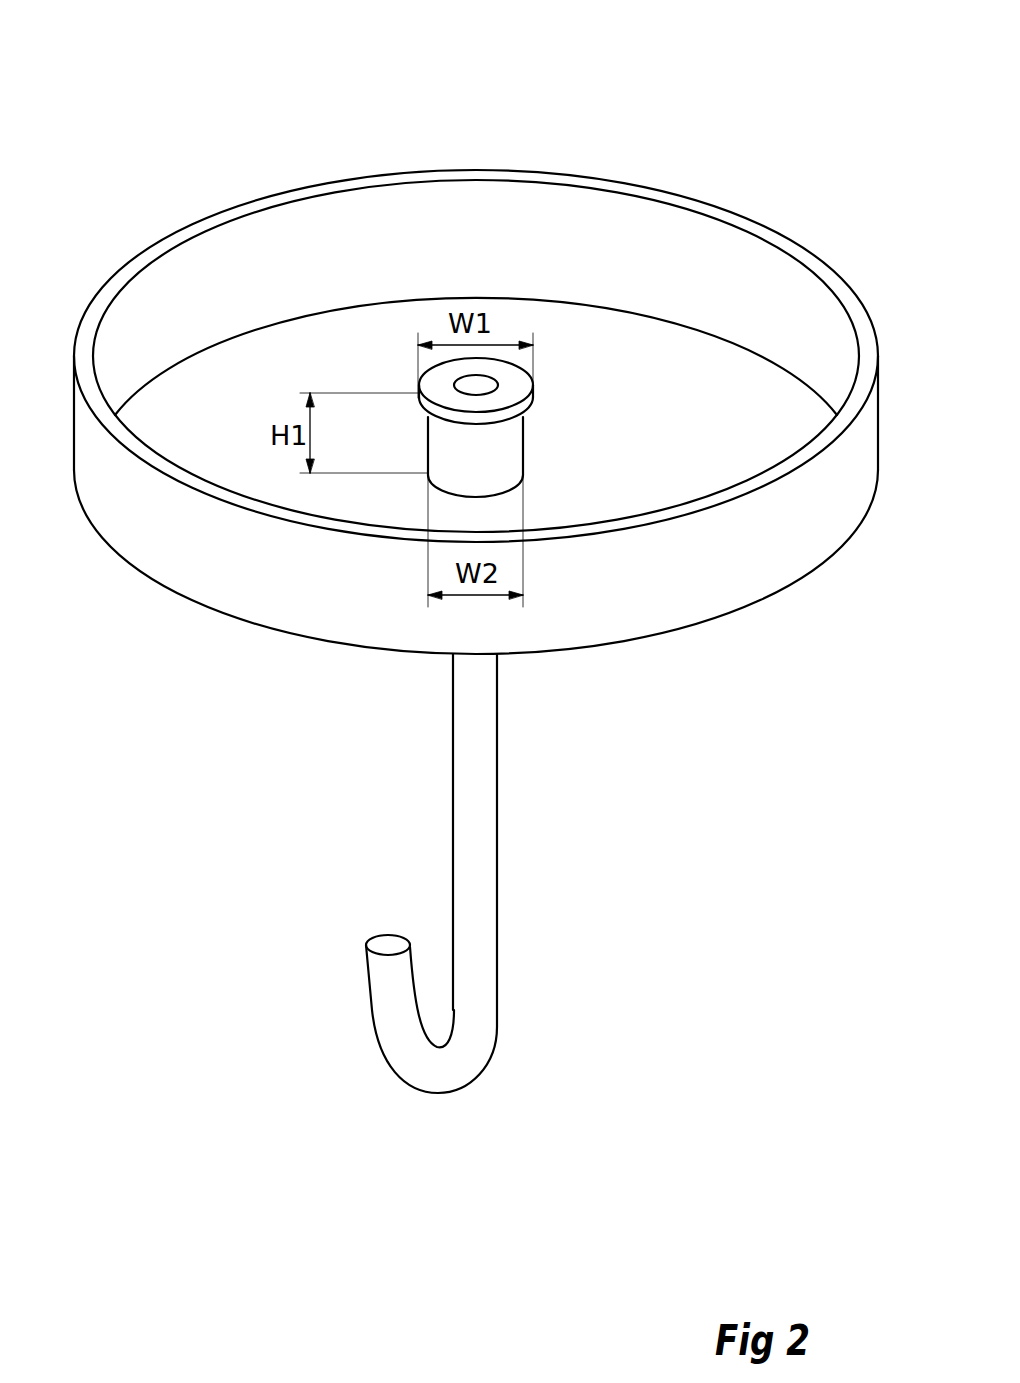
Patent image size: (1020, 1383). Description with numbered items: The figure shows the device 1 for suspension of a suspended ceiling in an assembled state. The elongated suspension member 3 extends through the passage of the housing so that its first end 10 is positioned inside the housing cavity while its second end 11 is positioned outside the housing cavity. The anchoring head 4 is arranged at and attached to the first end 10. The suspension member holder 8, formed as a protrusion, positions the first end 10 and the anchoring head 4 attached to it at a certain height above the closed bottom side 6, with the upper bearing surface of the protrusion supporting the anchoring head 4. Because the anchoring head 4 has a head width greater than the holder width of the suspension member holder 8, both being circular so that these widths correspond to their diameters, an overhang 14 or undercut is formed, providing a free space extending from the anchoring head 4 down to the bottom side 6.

The device 1 is at (670, 128).
The elongated suspension member 3 is at (477, 750).
The anchoring head 4 is at (518, 412).
The closed bottom side 6 is at (343, 653).
The suspension member holder 8 is at (503, 453).
The first end 10 is at (470, 388).
The second end 11 is at (502, 1055).
The overhang 14 is at (523, 417).